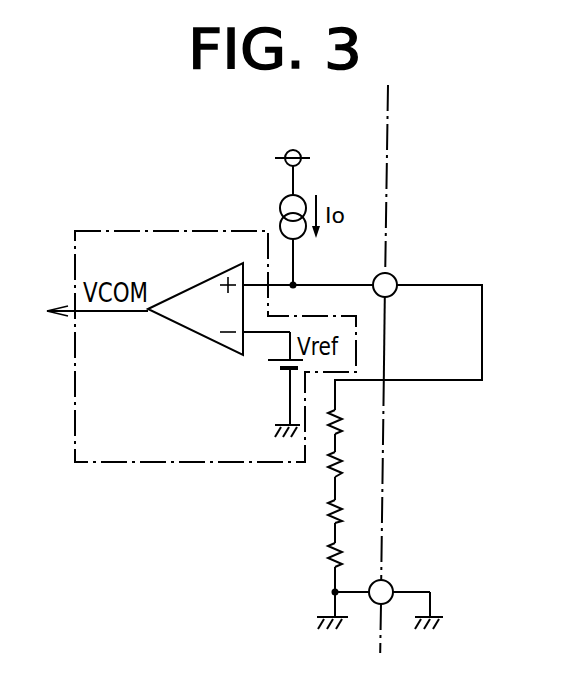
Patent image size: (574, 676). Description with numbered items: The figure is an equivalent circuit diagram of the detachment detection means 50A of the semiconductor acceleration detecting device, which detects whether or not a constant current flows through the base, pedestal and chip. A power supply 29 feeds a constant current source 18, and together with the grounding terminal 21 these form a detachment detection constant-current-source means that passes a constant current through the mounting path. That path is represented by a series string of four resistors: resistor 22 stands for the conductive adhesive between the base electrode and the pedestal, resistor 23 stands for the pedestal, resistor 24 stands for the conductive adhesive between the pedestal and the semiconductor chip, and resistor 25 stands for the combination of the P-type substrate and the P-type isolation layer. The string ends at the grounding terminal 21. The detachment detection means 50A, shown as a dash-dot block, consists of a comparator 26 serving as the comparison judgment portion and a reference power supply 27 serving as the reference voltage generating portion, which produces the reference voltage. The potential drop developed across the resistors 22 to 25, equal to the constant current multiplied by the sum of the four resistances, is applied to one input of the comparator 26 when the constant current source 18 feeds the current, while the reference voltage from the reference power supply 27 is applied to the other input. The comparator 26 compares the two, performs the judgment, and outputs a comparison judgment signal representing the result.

The detachment detection means 50A is at (160, 229).
The power supply 29 is at (302, 150).
The constant current source 18 is at (283, 206).
The comparator 26 is at (190, 329).
The reference power supply 27 is at (276, 370).
The resistor 22 is at (345, 423).
The resistor 23 is at (345, 470).
The resistor 24 is at (345, 515).
The resistor 25 is at (345, 560).
The grounding terminal 21 is at (435, 600).